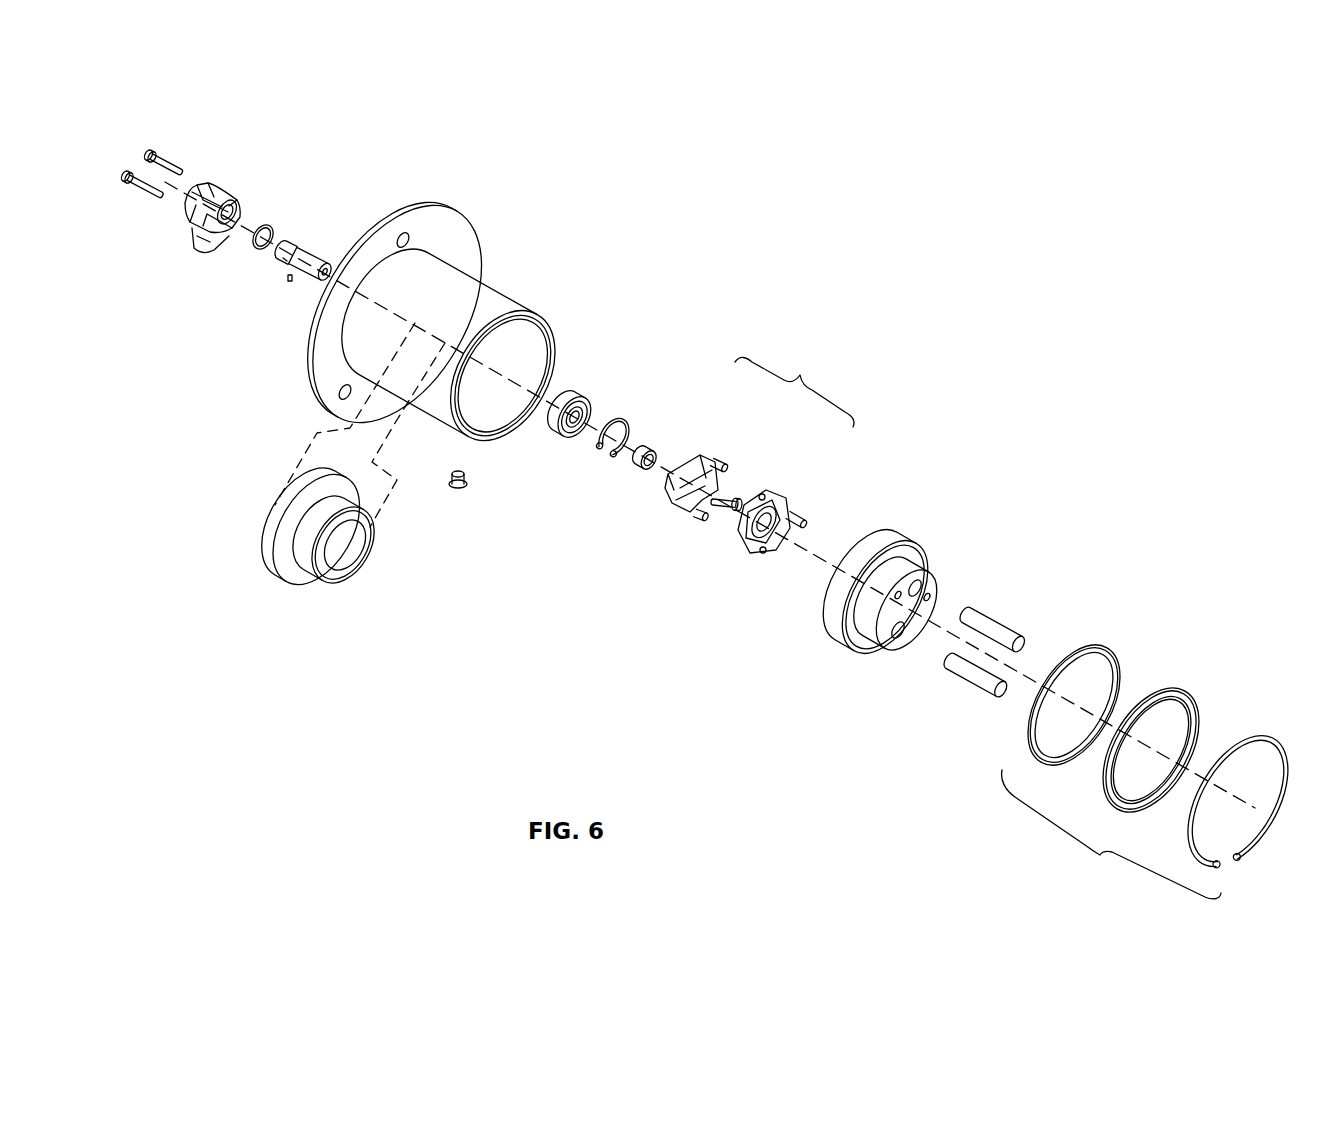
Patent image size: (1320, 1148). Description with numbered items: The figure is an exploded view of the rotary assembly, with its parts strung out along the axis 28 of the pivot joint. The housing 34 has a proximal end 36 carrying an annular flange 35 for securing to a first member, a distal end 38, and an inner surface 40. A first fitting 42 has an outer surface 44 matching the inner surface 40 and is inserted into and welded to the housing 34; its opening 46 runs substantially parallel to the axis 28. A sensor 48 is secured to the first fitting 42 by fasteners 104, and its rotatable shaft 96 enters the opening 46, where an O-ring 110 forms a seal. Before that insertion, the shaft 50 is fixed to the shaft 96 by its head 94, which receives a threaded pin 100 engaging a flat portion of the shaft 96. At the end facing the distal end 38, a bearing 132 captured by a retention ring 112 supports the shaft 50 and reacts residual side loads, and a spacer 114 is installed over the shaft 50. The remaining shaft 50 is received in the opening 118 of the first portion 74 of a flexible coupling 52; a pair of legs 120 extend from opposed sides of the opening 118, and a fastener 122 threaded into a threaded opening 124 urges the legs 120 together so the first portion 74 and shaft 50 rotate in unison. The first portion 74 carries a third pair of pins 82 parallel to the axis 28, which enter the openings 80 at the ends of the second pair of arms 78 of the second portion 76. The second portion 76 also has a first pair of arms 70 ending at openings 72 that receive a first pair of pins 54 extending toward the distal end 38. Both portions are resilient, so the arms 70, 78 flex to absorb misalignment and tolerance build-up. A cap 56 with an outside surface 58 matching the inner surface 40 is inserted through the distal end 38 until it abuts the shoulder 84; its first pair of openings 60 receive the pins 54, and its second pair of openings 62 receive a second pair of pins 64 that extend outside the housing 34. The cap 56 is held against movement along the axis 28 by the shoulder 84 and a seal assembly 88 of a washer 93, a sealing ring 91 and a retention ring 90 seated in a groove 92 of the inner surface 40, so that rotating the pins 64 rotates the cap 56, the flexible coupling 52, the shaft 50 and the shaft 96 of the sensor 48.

The axis 28 is at (823, 557).
The housing 34 is at (511, 302).
The annular flange 35 is at (478, 245).
The proximal end 36 is at (415, 213).
The distal end 38 is at (546, 334).
The inner surface 40 is at (480, 424).
The first fitting 42 is at (320, 588).
The outer surface 44 is at (276, 586).
The opening 46 is at (346, 556).
The sensor 48 is at (226, 192).
The shaft 50 is at (312, 256).
The flexible coupling 52 is at (800, 375).
The first pair of pins 54 is at (803, 524).
The cap 56 is at (933, 576).
The outside surface 58 is at (900, 530).
The first pair of openings 60 is at (931, 597).
The second pair of openings 62 is at (918, 600).
The second pair of pins 64 is at (1002, 628).
The first pair of arms 70 is at (745, 530).
The opening 72 is at (788, 500).
The first portion 74 is at (690, 470).
The second portion 76 is at (755, 552).
The second pair of arms 78 is at (762, 495).
The opening 80 is at (766, 568).
The third pair of pins 82 is at (720, 465).
The shoulder 84 is at (518, 352).
The seal assembly 88 is at (1099, 855).
The retention ring 90 is at (1265, 745).
The sealing ring 91 is at (1178, 692).
The groove 92 is at (512, 423).
The washer 93 is at (1100, 650).
The head 94 is at (285, 260).
The rotatable shaft 96 is at (222, 240).
The threaded pin 100 is at (290, 282).
The fasteners 104 is at (168, 162).
The O-ring 110 is at (268, 226).
The retention ring 112 is at (622, 417).
The spacer 114 is at (650, 447).
The opening 118 is at (677, 480).
The legs 120 is at (667, 495).
The fastener 122 is at (716, 508).
The threaded opening 124 is at (680, 508).
The bearing 132 is at (583, 396).